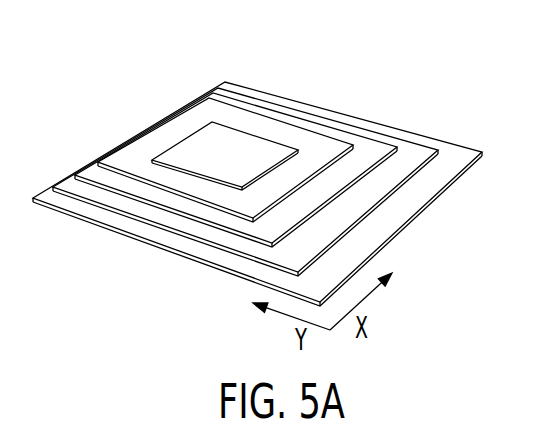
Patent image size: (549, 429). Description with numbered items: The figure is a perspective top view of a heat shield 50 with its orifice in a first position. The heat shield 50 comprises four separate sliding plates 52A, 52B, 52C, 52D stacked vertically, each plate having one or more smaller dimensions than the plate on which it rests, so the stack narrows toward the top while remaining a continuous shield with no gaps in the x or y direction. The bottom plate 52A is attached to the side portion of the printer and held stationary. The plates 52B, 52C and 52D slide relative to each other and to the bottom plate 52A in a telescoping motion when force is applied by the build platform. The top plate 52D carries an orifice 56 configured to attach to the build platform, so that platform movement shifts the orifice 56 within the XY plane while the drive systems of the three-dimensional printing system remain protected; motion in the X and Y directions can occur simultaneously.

The heat shield 50 is at (262, 160).
The bottom plate 52A is at (460, 157).
The plate 52B is at (417, 148).
The plate 52C is at (263, 227).
The top plate 52D is at (117, 160).
The orifice 56 is at (227, 160).